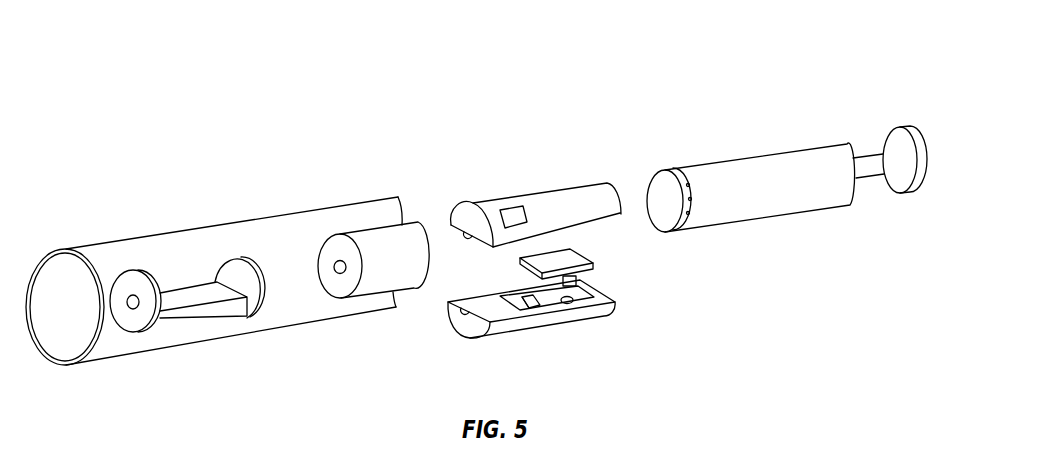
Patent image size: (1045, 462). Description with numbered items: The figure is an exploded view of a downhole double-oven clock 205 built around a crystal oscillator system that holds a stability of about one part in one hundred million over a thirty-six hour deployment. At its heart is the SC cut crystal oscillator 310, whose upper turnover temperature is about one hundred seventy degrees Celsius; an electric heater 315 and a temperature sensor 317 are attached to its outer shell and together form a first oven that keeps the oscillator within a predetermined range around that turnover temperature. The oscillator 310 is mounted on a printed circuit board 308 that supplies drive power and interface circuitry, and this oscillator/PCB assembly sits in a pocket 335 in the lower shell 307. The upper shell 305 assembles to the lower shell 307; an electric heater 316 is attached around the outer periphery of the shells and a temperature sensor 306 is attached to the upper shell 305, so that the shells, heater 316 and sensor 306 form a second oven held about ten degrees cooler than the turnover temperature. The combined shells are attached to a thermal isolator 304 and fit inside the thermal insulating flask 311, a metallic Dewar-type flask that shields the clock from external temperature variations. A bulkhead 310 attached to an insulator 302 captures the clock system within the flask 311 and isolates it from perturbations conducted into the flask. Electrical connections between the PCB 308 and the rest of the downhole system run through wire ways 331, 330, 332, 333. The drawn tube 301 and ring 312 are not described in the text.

The clock 205 is at (193, 62).
The outer tube 301 is at (143, 236).
The insulator 302 is at (203, 322).
The thermal isolator 304 is at (372, 229).
The upper shell 305 is at (573, 187).
The temperature sensor 306 is at (517, 203).
The lower shell 307 is at (530, 332).
The printed circuit board 308 is at (590, 259).
The crystal oscillator 310 is at (248, 312).
The thermal insulating flask 311 is at (778, 150).
The ring 312 is at (684, 230).
The electric heater 315 is at (662, 292).
The electric heater 316 is at (461, 195).
The temperature sensor 317 is at (578, 281).
The wire way 330 is at (462, 314).
The wire way 331 is at (469, 236).
The wire way 332 is at (333, 265).
The wire way 333 is at (126, 302).
The pocket 335 is at (526, 296).